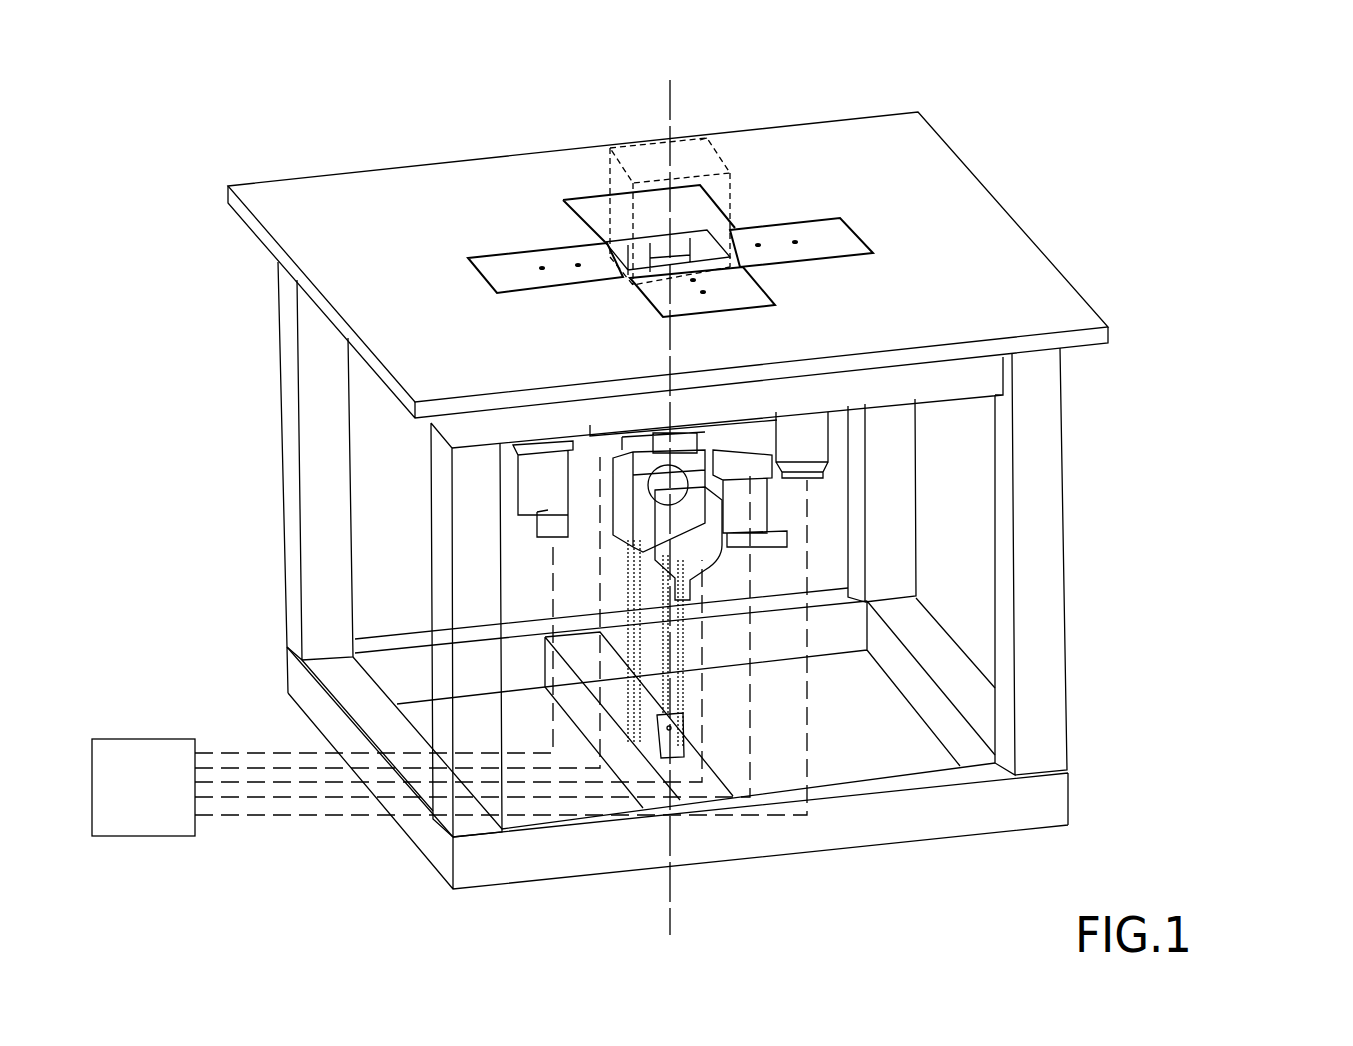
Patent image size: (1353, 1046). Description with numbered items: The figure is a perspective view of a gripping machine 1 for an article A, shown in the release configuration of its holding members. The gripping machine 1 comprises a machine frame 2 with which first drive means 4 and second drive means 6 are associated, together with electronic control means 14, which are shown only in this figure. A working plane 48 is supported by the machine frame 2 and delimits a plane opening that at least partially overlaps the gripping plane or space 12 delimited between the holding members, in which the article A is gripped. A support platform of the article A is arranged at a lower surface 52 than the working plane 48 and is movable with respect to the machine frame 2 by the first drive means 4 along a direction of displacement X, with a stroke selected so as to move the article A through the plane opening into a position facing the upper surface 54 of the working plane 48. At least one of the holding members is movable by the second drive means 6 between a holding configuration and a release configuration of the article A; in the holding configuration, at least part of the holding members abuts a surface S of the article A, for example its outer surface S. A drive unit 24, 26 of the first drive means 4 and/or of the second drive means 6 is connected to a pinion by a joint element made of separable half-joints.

The gripping machine 1 is at (1264, 244).
The machine frame 2 is at (1068, 534).
The first drive means 4 is at (722, 560).
The second drive means 6 is at (515, 487).
The gripping plane or space 12 is at (607, 243).
The electronic control means 14 is at (449, 646).
The drive unit 24 is at (665, 548).
The drive unit 26 is at (772, 497).
The working plane 48 is at (247, 181).
The lower surface 52 is at (1091, 350).
The upper surface 54 is at (987, 240).
The article A is at (718, 152).
The surface of the article S is at (717, 202).
The direction of displacement X is at (680, 920).